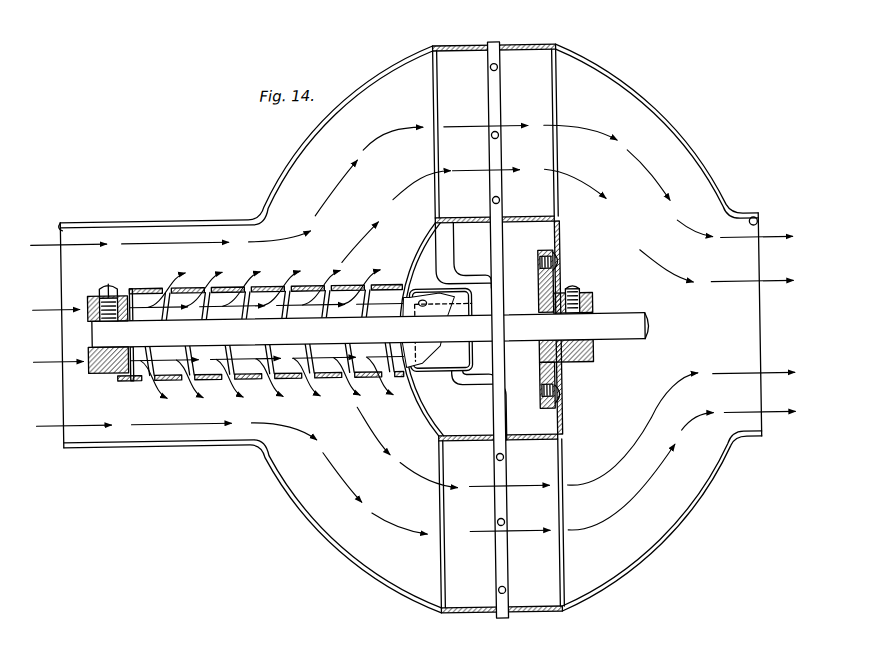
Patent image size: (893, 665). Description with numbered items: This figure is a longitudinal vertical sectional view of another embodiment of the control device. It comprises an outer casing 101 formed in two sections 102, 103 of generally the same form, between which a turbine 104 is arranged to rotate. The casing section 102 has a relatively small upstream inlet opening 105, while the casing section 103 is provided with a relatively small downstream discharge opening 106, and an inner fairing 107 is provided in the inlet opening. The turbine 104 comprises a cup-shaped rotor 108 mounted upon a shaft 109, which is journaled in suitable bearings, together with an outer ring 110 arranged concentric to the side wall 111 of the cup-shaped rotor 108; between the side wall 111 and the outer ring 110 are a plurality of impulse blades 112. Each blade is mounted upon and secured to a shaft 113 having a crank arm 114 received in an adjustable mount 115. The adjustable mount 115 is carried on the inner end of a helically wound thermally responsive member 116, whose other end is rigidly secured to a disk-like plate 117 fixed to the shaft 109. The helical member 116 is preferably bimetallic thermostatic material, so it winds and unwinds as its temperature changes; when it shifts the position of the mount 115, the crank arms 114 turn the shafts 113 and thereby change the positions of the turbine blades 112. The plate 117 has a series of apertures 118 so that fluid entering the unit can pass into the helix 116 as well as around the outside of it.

The outer casing 101 is at (411, 330).
The casing section 102 is at (373, 78).
The casing section 103 is at (667, 111).
The turbine 104 is at (528, 43).
The inlet opening 105 is at (65, 223).
The discharge opening 106 is at (762, 229).
The inner fairing 107 is at (424, 249).
The cup-shaped rotor 108 is at (560, 238).
The shaft 109 is at (623, 319).
The outer ring 110 is at (460, 44).
The side wall 111 is at (522, 213).
The impulse blades 112 is at (561, 109).
The shaft 113 is at (494, 97).
The crank arm 114 is at (458, 272).
The adjustable mount 115 is at (470, 303).
The helically wound thermally responsive member 116 is at (364, 384).
The disk-like plate 117 is at (129, 282).
The apertures 118 is at (98, 291).